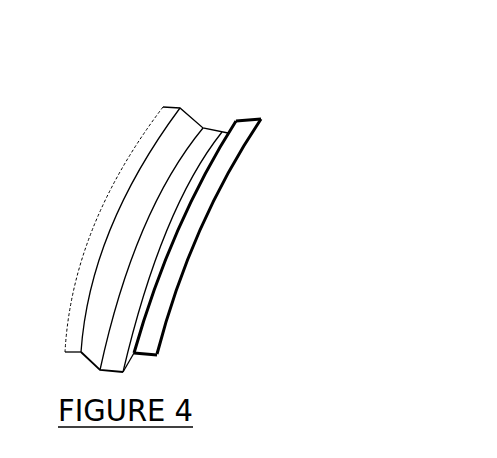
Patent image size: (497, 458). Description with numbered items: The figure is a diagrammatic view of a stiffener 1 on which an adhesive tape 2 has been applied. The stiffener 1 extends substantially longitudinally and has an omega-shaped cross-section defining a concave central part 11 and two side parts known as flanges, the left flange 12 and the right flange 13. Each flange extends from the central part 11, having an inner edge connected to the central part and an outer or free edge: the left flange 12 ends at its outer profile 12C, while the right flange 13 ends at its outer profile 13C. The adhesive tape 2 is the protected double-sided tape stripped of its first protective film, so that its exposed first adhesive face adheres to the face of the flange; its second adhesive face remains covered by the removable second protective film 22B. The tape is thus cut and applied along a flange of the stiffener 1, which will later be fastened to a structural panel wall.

The stiffener 1 is at (183, 191).
The adhesive tape 2 is at (238, 183).
The central part 11 is at (168, 172).
The left flange 12 is at (102, 229).
The outer profile 12C is at (90, 227).
The right flange 13 is at (233, 191).
The outer profile 13C is at (183, 282).
The second protective film 22B is at (215, 178).